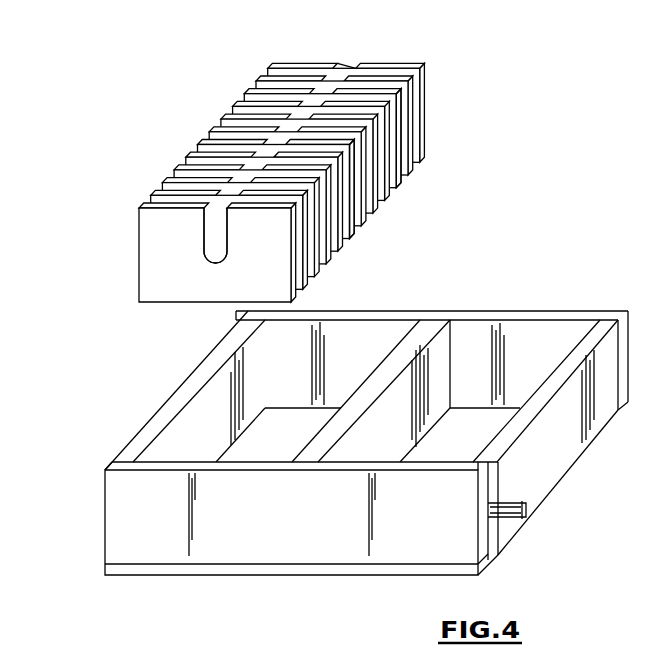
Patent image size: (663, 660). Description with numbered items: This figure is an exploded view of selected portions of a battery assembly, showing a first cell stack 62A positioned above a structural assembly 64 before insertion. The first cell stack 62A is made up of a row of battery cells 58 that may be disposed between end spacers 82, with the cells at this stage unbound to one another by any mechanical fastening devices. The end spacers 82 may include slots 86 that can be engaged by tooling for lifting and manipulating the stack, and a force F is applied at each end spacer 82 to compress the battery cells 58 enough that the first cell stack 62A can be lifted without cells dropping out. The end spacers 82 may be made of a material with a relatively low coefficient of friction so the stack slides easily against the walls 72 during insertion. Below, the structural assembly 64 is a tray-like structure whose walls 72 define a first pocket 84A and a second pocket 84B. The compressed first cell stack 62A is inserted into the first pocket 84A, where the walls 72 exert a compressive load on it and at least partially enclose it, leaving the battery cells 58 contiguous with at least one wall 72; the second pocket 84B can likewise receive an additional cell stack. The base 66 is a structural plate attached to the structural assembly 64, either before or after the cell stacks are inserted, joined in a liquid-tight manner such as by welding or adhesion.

The first cell stack 62A is at (192, 120).
The end spacer 82 is at (424, 106).
The slot 86 is at (350, 71).
The battery cell 58 is at (342, 235).
The force F is at (392, 63).
The structural assembly 64 is at (128, 425).
The wall 72 is at (215, 441).
The first pocket 84A is at (352, 377).
The second pocket 84B is at (472, 377).
The base 66 is at (297, 568).